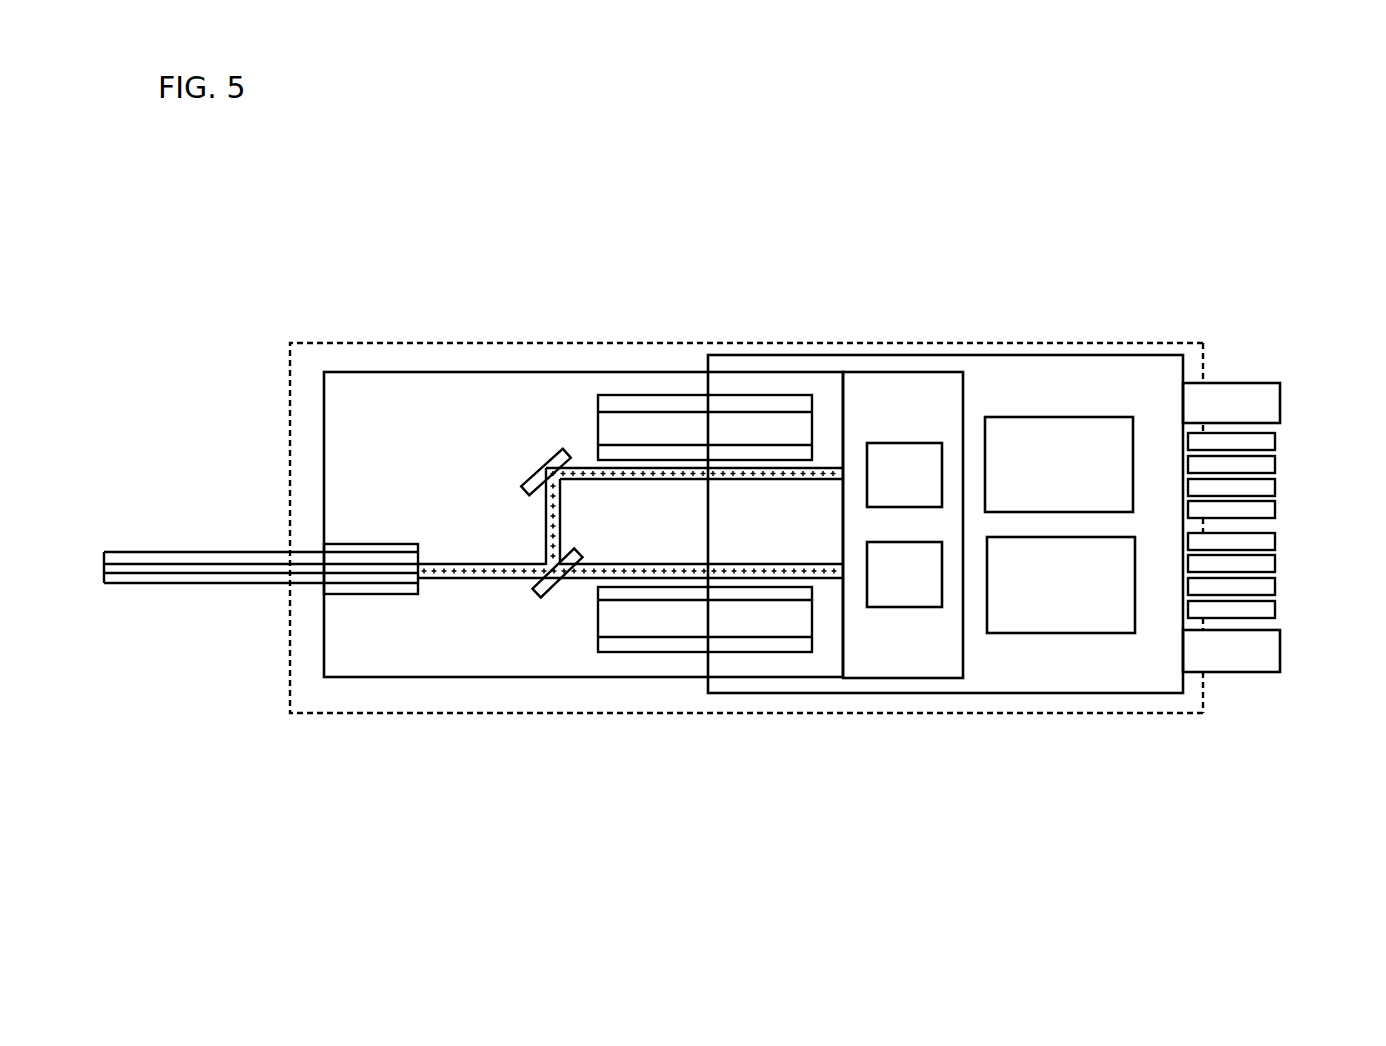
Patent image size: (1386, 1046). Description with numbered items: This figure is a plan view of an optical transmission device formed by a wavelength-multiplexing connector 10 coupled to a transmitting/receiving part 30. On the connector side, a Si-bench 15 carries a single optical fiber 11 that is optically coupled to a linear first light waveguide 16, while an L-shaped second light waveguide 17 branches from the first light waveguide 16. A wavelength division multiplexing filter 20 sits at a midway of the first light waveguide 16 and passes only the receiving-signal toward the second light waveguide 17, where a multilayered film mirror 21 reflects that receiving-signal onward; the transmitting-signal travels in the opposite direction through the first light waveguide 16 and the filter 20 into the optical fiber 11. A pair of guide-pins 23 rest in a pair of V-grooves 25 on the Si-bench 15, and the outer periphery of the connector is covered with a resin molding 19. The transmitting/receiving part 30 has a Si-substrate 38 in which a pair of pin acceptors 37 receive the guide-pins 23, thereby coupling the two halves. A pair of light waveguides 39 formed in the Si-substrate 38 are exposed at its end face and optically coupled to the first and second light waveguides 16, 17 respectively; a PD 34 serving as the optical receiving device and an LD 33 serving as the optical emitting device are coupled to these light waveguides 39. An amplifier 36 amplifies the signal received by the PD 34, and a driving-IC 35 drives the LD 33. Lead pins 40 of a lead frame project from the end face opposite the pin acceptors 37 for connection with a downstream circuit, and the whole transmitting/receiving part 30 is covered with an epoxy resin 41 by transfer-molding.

The wavelength-multiplexing connector 10 is at (589, 481).
The single optical fiber 11 is at (261, 513).
The Si-bench 15 is at (583, 451).
The first light waveguide 16 is at (629, 688).
The second light waveguide 17 is at (694, 373).
The resin molding 19 is at (715, 467).
The wavelength division multiplexing filter 20 is at (557, 684).
The multilayered film mirror 21 is at (587, 380).
The guide-pins 23 is at (726, 364).
The V-grooves 25 is at (705, 705).
The transmitting/receiving part 30 is at (1038, 491).
The LD 33 is at (904, 686).
The PD 34 is at (910, 388).
The driving-IC 35 is at (1061, 685).
The amplifier 36 is at (1079, 386).
The pin acceptors 37 is at (705, 711).
The Si-substrate 38 is at (875, 549).
The light waveguides 39 is at (693, 384).
The lead pins 40 is at (1276, 527).
The epoxy resin 41 is at (1236, 498).